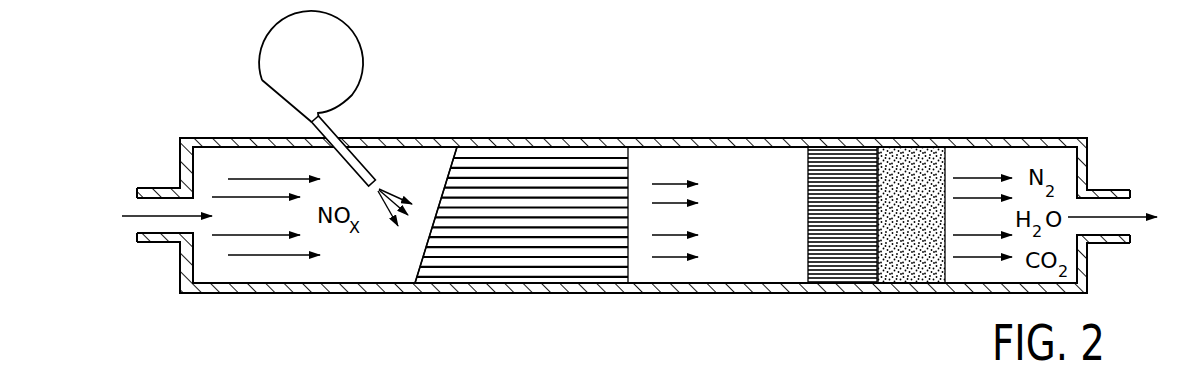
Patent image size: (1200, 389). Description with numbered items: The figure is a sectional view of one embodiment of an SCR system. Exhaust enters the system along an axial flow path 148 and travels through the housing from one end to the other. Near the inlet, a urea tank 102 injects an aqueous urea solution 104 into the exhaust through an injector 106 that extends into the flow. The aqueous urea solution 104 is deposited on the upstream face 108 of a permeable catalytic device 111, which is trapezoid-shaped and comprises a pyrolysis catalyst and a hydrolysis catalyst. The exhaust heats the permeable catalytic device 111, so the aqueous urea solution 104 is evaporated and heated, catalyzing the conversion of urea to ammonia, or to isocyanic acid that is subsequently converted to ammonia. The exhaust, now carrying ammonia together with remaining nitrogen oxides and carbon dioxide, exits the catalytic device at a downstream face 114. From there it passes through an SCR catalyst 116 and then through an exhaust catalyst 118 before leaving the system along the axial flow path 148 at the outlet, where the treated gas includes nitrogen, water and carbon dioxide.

The urea tank 102 is at (362, 60).
The aqueous urea solution 104 is at (388, 203).
The injector 106 is at (357, 145).
The upstream face 108 is at (452, 160).
The permeable catalytic device 111 is at (508, 275).
The downstream face 114 is at (628, 268).
The SCR catalyst 116 is at (852, 158).
The exhaust catalyst 118 is at (913, 278).
The axial flow path 148 is at (129, 214).